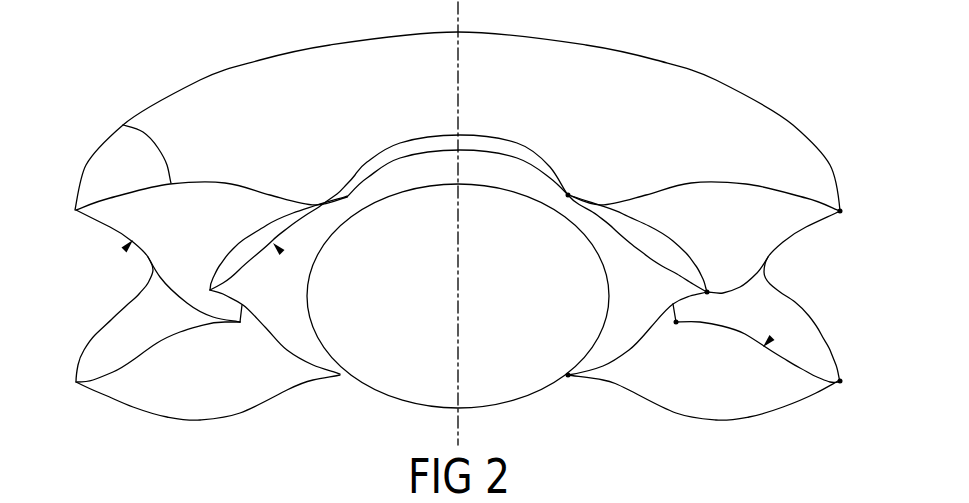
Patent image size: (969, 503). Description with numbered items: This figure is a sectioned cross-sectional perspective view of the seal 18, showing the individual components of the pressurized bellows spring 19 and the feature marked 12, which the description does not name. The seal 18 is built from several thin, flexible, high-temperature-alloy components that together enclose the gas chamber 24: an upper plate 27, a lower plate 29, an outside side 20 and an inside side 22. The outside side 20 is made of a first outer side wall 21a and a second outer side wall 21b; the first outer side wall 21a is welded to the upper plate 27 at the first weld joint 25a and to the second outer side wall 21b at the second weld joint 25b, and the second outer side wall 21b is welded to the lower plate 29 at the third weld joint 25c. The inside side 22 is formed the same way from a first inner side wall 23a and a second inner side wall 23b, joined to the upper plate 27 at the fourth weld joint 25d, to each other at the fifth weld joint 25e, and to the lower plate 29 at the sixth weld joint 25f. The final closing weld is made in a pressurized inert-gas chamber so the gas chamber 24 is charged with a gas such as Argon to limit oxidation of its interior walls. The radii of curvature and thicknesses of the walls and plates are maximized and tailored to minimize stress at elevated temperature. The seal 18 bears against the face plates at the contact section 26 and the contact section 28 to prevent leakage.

The axis / hub center 12 is at (457, 279).
The seal 18 is at (651, 92).
The bellows spring 19 is at (119, 255).
The outside side 20 is at (148, 256).
The first outer side wall 21a is at (803, 223).
The second outer side wall 21b is at (779, 356).
The inside side 22 is at (284, 347).
The first inner side wall 23a is at (597, 220).
The second inner side wall 23b is at (625, 352).
The gas chamber 24 is at (208, 232).
The first weld joint 25a is at (841, 211).
The second weld joint 25b is at (675, 325).
The third weld joint 25c is at (840, 383).
The fourth weld joint 25d is at (566, 196).
The fifth weld joint 25e is at (710, 292).
The sixth weld joint 25f is at (566, 374).
The contact section 26 is at (123, 125).
The upper plate 27 is at (548, 102).
The contact section 28 is at (202, 421).
The lower plate 29 is at (300, 385).